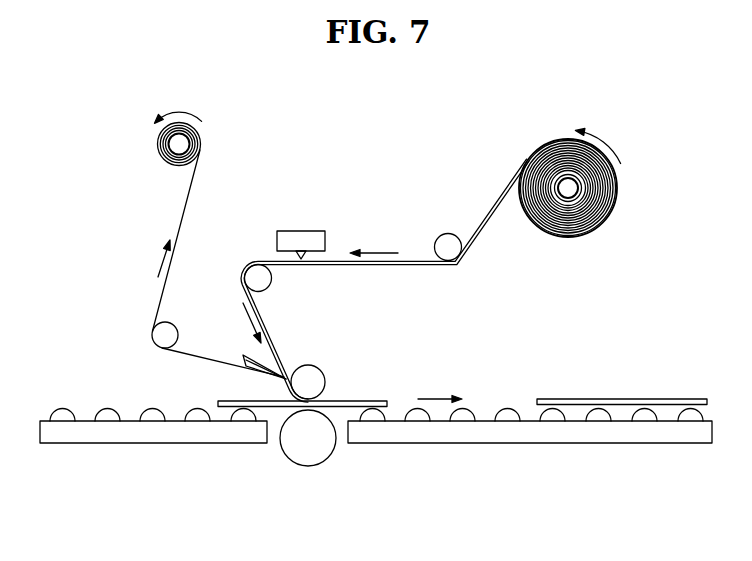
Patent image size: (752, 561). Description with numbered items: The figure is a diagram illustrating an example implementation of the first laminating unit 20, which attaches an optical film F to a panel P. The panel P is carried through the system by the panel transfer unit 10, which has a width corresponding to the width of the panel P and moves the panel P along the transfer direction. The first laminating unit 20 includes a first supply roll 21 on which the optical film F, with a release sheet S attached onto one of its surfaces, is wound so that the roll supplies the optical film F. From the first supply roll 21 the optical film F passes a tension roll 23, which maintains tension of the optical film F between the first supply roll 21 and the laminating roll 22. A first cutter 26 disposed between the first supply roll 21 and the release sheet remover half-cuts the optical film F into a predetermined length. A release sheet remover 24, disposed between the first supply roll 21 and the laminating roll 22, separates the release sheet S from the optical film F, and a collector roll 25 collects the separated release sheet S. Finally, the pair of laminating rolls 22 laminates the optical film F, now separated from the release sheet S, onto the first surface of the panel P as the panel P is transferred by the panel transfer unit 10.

The panel transfer unit 10 is at (83, 443).
The first laminating unit 20 is at (315, 160).
The first supply roll 21 is at (618, 188).
The laminating rolls 22 is at (318, 385).
The tension roll 23 is at (449, 234).
The release sheet remover 24 is at (243, 356).
The collector roll 25 is at (202, 143).
The first cutter 26 is at (316, 231).
The optical film F is at (372, 401).
The release sheet S is at (165, 284).
The panel P is at (280, 408).